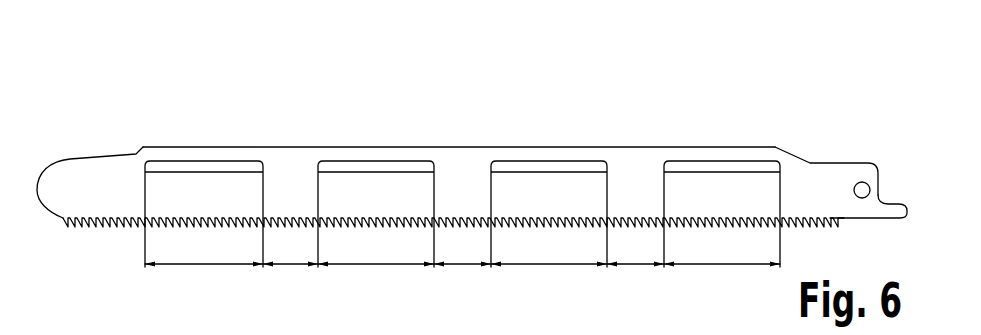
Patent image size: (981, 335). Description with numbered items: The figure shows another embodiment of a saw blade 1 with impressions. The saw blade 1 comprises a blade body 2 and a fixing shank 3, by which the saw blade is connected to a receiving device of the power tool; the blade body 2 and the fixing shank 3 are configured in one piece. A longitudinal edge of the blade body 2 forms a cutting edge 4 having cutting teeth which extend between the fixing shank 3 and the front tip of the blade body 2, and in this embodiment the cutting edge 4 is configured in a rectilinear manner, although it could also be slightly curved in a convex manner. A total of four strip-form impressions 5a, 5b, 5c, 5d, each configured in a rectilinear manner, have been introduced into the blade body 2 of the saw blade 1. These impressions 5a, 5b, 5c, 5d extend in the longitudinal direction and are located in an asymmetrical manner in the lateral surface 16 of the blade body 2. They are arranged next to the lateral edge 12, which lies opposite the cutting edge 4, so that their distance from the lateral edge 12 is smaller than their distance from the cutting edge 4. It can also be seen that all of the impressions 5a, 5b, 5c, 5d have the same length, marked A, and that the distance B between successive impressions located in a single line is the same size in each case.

The saw blade 1 is at (472, 155).
The blade body 2 is at (302, 149).
The fixing shank 3 is at (843, 205).
The cutting edge 4 is at (467, 216).
The strip-form impression 5a is at (202, 168).
The strip-form impression 5b is at (375, 168).
The strip-form impression 5c is at (548, 168).
The strip-form impression 5d is at (720, 168).
The lateral edge 12 is at (508, 147).
The lateral surface 16 is at (637, 175).